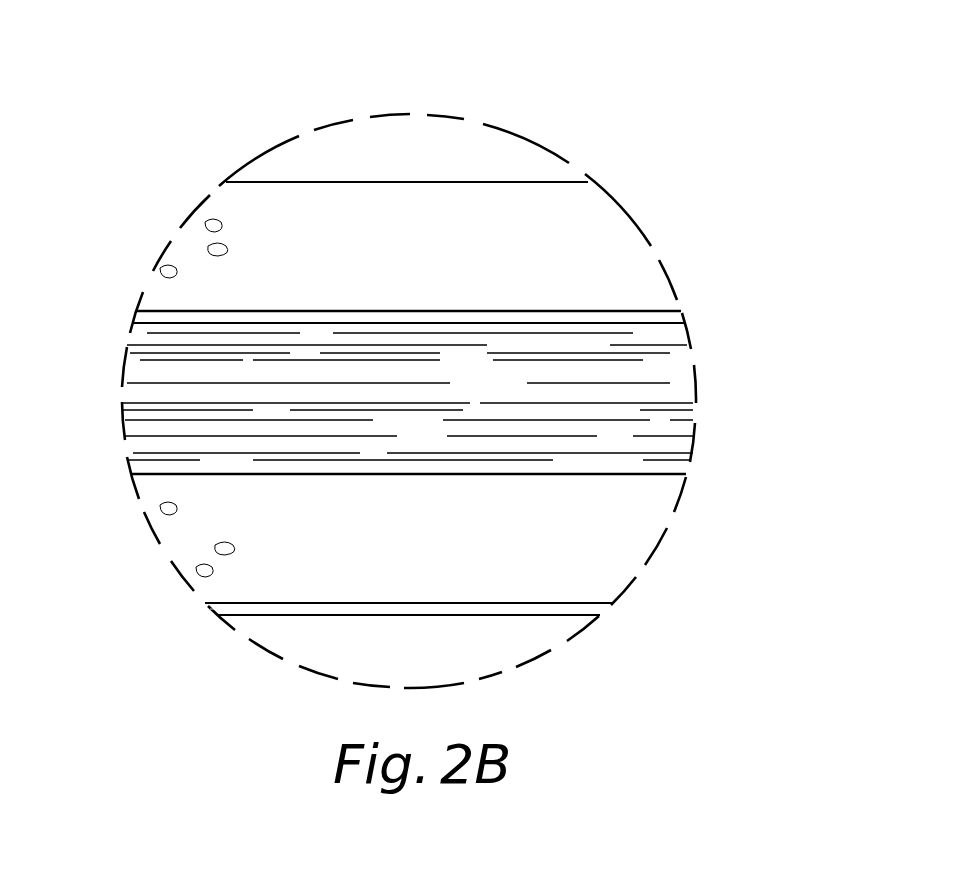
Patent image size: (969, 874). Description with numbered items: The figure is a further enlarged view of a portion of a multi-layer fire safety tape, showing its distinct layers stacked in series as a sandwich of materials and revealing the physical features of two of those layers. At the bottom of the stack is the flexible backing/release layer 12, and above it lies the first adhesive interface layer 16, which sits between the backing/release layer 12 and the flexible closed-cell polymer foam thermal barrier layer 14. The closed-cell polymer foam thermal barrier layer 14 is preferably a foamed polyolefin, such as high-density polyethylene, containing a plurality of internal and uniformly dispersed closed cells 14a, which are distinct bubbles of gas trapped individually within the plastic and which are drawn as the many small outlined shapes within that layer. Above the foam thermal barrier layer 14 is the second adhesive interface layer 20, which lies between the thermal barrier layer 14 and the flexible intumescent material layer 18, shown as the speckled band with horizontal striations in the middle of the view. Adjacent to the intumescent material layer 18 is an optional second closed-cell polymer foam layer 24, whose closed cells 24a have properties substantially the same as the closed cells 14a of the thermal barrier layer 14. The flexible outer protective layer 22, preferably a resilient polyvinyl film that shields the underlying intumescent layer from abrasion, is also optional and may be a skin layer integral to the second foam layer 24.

The flexible backing/release layer 12 is at (598, 612).
The closed-cell polymer foam thermal barrier layer 14 is at (615, 535).
The closed cells 14a is at (203, 572).
The first adhesive interface layer 16 is at (585, 603).
The flexible intumescent material layer 18 is at (670, 397).
The second adhesive interface layer 20 is at (662, 475).
The flexible outer protective layer 22 is at (678, 313).
The second closed-cell polymer foam layer 24 is at (593, 225).
The closed cells 24a is at (170, 273).